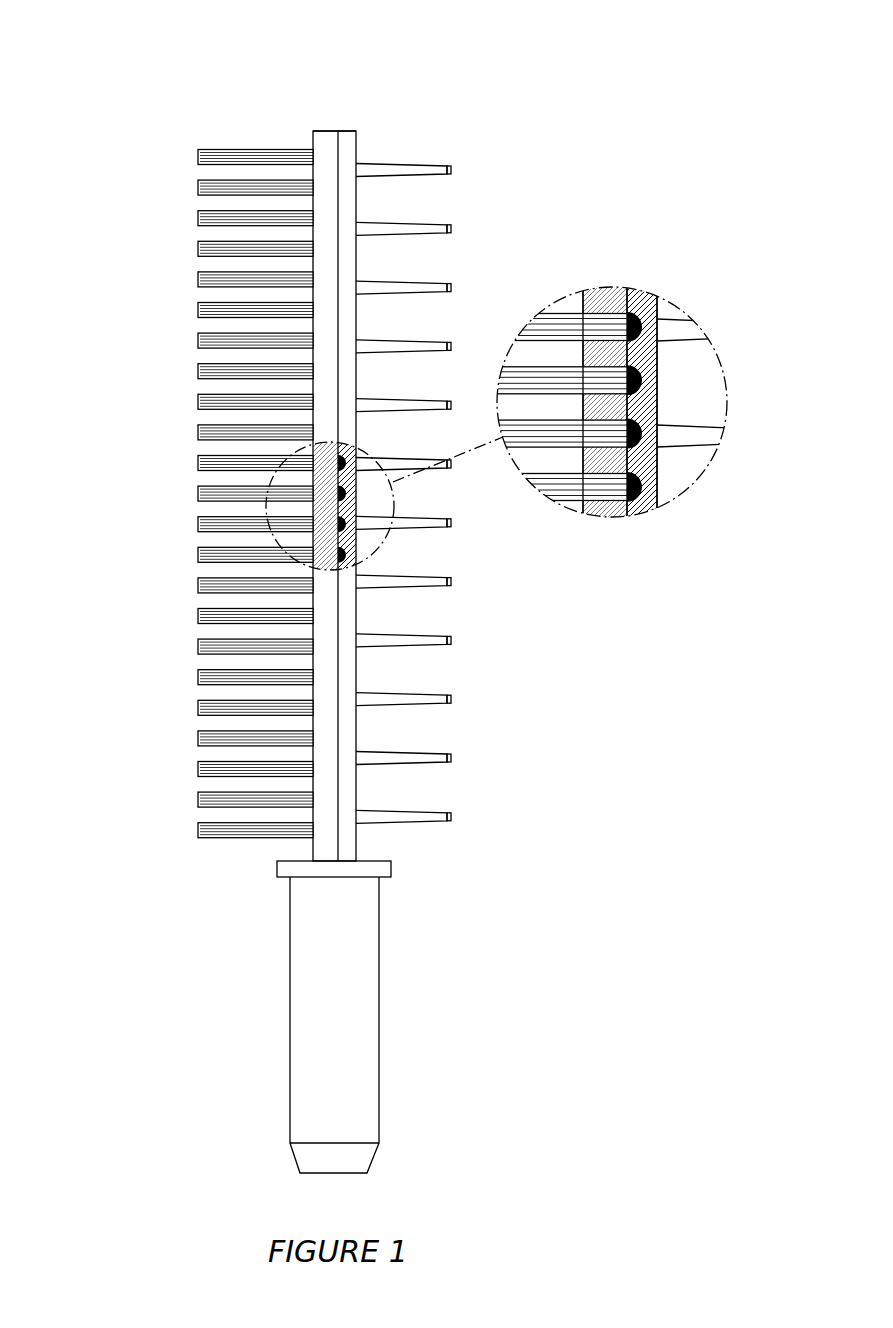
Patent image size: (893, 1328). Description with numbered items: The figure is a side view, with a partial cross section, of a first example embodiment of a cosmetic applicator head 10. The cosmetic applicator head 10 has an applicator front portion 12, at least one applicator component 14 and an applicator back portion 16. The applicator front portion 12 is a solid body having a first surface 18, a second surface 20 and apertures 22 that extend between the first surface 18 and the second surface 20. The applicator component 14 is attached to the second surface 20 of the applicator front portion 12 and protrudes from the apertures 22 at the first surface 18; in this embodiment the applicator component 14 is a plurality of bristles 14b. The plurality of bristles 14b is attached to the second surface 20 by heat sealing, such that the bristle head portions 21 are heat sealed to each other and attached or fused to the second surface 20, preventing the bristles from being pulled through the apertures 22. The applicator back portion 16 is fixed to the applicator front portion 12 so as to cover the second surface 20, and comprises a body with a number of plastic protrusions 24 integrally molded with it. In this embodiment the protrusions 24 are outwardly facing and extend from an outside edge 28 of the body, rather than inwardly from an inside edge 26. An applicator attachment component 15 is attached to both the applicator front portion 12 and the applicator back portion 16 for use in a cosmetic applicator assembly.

The cosmetic applicator head 10 is at (503, 108).
The applicator front portion 12 is at (278, 432).
The applicator component 14 is at (421, 458).
The plurality of bristles 14b is at (198, 310).
The applicator attachment component 15 is at (380, 1009).
The applicator back portion 16 is at (362, 142).
The first surface 18 is at (313, 131).
The second surface 20 is at (634, 357).
The bristle head portions 21 is at (650, 380).
The apertures 22 is at (578, 452).
The protrusions 24 is at (451, 230).
The inside edge 26 is at (336, 268).
The outside edge 28 is at (356, 725).